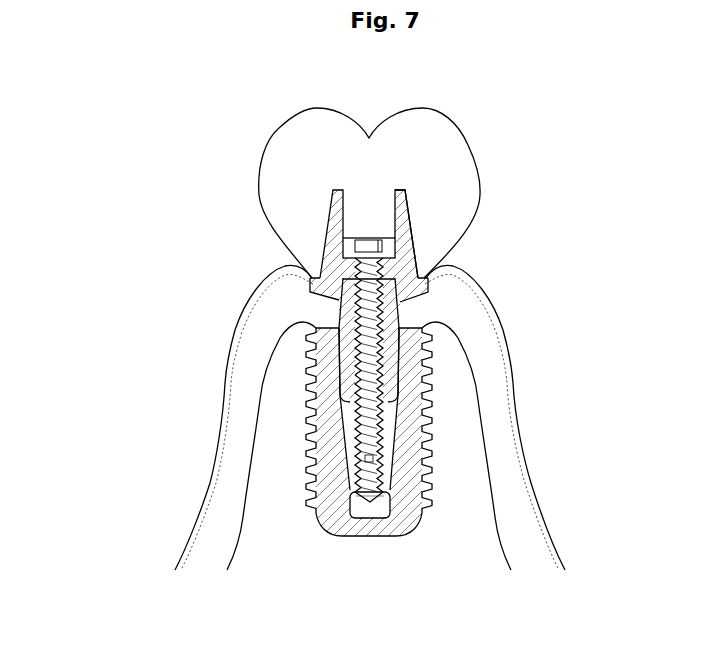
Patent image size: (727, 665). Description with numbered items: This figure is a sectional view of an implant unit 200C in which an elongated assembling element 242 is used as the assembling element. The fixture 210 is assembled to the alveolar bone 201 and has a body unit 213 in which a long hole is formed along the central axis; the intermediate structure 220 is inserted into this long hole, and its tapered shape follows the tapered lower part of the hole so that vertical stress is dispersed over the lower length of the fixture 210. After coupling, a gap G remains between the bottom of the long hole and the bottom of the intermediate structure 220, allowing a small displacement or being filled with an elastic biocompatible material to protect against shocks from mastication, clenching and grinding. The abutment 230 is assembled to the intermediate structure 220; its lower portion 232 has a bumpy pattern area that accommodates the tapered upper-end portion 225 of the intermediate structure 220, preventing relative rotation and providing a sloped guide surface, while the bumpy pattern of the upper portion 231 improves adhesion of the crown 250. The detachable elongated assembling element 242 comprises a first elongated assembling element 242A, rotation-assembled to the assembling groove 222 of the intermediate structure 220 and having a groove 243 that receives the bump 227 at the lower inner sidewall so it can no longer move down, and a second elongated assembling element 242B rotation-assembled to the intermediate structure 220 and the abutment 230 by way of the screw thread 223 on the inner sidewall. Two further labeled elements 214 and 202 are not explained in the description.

The implant unit 200C is at (498, 154).
The crown 250 is at (280, 157).
The intermediate structure 220 is at (388, 291).
The upper portion 231 is at (397, 226).
The lower portion 232 is at (423, 273).
The upper-end portion 225 is at (403, 302).
The abutment 230 is at (293, 401).
The elongated assembling element 242 is at (210, 375).
The first elongated assembling element 242A is at (365, 478).
The second elongated assembling element 242B is at (356, 344).
The groove 243 is at (371, 505).
The fixture 210 is at (373, 482).
The body unit 213 is at (318, 430).
The fixture external thread 214 is at (421, 486).
The assembling groove 222 is at (315, 399).
The screw thread 223 is at (398, 378).
The bump 227 is at (375, 506).
The gap G is at (373, 507).
The alveolar bone 201 is at (460, 533).
The gum 202 is at (540, 538).